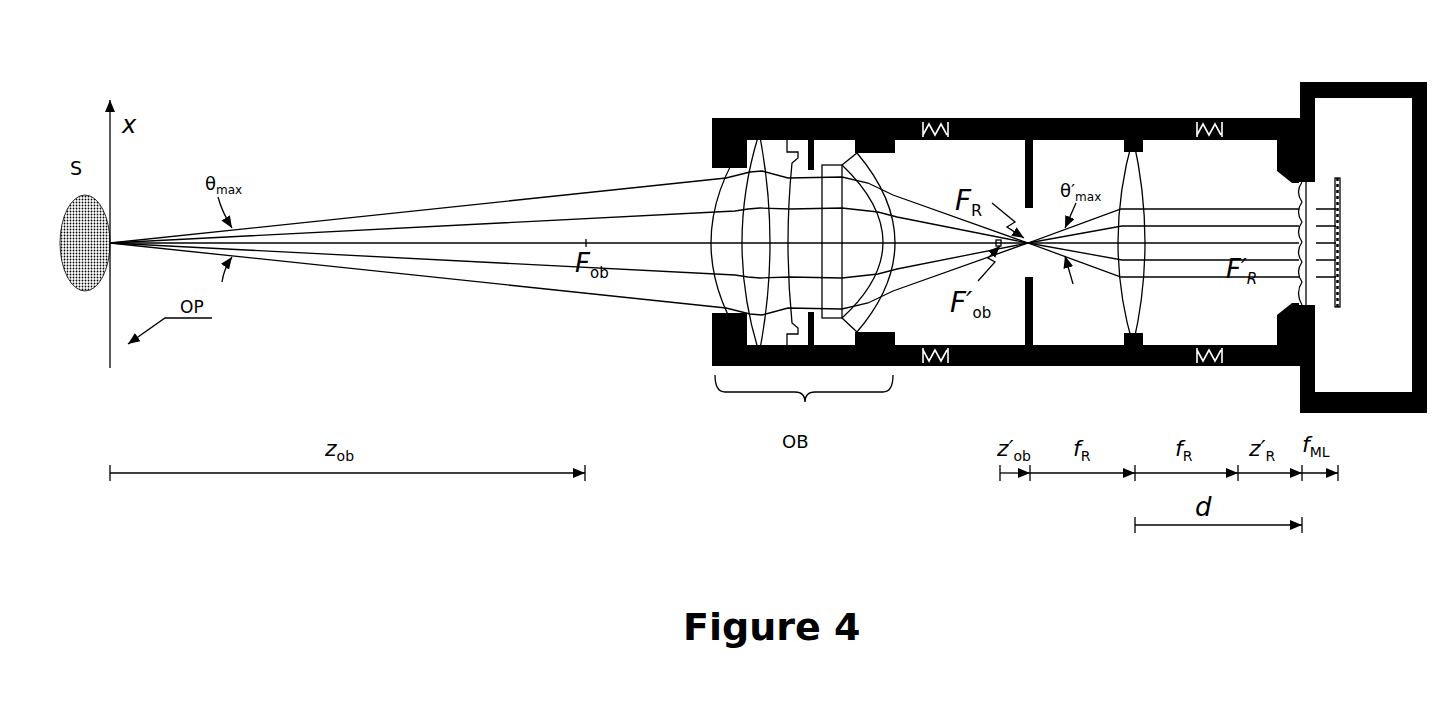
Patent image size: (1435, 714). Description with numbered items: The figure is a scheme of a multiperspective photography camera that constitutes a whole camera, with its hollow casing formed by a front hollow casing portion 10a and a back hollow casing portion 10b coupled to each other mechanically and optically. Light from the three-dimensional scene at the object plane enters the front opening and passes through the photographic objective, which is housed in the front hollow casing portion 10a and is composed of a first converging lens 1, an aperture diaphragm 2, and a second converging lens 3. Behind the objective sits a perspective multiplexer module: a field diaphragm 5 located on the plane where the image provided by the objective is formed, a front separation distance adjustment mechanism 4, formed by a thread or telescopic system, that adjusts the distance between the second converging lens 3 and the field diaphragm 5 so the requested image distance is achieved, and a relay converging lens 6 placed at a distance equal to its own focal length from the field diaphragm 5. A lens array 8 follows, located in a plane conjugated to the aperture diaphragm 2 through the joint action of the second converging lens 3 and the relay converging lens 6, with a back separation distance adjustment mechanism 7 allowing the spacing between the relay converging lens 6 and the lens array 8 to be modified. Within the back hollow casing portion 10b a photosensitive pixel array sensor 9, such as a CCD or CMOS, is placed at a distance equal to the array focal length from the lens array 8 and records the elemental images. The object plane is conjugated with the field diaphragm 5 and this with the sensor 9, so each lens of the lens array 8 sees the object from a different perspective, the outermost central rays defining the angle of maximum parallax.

The converging lens L1 1 is at (754, 201).
The aperture diaphragm 2 is at (808, 218).
The converging lens L2 3 is at (858, 199).
The front separation distance adjustment mechanism 4 is at (933, 224).
The field diaphragm 5 is at (1023, 218).
The converging lens LR 6 is at (1131, 199).
The back separation distance adjustment mechanism 7 is at (1206, 227).
The lens array 8 is at (1282, 243).
The photosensitive pixel array sensor 9 is at (1346, 256).
The front hollow casing portion 10a is at (1060, 102).
The back hollow casing portion 10b is at (1363, 230).